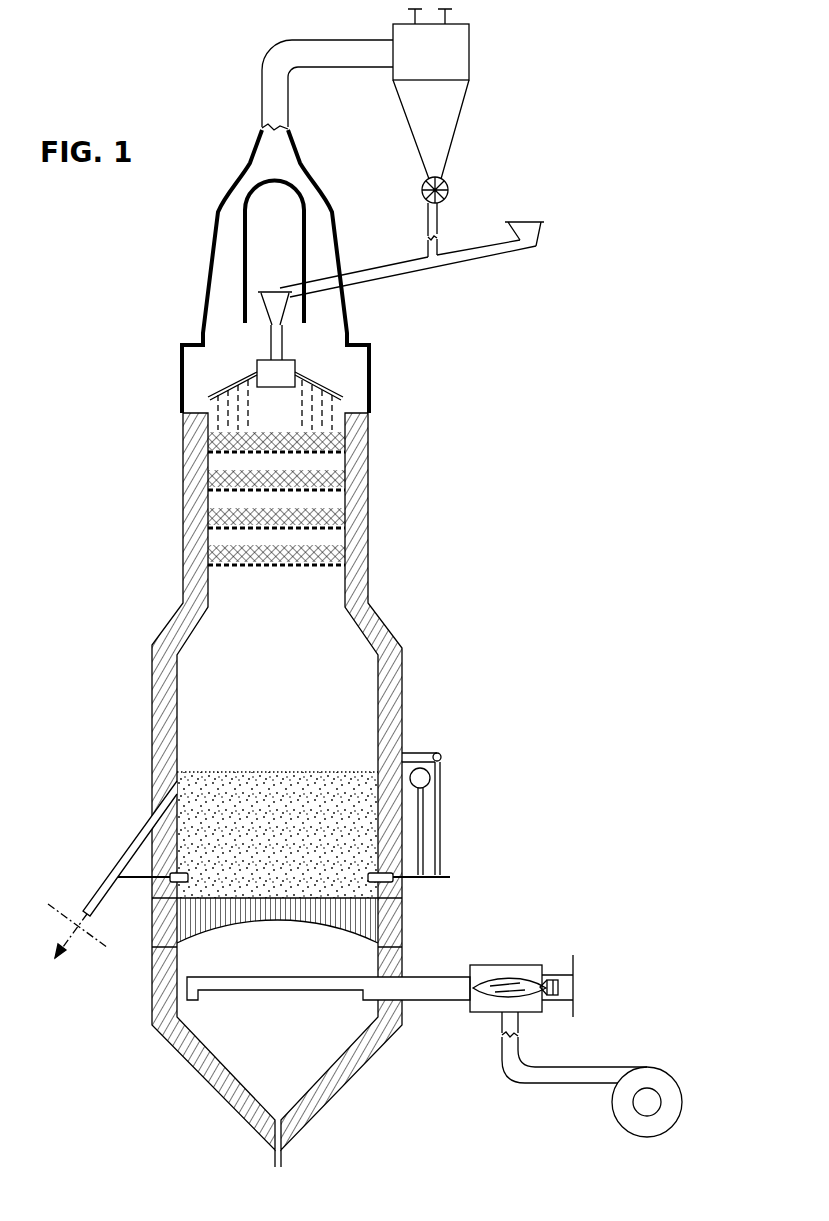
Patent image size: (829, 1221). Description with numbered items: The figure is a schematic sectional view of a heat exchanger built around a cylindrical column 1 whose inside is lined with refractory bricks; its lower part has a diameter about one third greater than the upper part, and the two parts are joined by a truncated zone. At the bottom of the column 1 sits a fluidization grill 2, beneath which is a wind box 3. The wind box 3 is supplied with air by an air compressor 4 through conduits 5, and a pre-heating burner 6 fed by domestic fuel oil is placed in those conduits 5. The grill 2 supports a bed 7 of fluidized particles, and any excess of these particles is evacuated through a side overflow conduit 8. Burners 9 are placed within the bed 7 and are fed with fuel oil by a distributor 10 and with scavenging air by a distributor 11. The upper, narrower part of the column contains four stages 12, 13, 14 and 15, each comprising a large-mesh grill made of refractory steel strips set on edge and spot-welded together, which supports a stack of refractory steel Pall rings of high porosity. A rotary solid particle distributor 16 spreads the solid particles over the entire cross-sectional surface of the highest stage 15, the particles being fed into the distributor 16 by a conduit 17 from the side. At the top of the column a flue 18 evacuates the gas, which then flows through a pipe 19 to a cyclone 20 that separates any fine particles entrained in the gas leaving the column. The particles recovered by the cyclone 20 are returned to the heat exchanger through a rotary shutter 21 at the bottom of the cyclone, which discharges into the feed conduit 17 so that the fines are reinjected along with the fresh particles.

The cylindrical column 1 is at (388, 628).
The fluidization grill 2 is at (265, 905).
The wind box 3 is at (327, 1042).
The air compressor 4 is at (670, 1082).
The conduits 5 is at (506, 1076).
The pre-heating burner 6 is at (550, 980).
The bed of fluidized particles 7 is at (300, 815).
The side overflow conduit 8 is at (123, 842).
The burners 9 is at (185, 872).
The distributor 10 is at (441, 757).
The distributor 11 is at (430, 778).
The stage 12 is at (342, 555).
The stage 13 is at (342, 517).
The stage 14 is at (342, 478).
The stage 15 is at (340, 441).
The rotary solid particle distributor 16 is at (268, 368).
The conduit 17 is at (400, 277).
The flue 18 is at (221, 243).
The pipe 19 is at (263, 60).
The cyclone 20 is at (470, 66).
The rotary shutter 21 is at (448, 192).